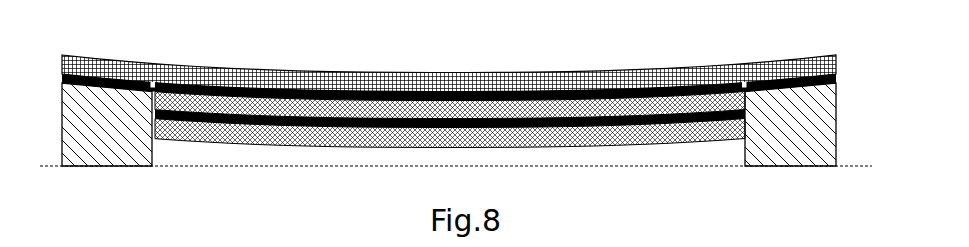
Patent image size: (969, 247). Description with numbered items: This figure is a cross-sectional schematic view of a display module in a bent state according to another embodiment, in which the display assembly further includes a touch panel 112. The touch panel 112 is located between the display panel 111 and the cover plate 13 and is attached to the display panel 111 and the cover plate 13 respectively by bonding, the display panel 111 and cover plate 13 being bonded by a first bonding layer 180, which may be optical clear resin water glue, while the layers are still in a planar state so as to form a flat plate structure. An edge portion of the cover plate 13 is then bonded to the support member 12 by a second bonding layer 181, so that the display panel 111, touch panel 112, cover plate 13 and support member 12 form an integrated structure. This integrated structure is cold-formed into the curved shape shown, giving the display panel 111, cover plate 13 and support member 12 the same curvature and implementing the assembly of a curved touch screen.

The support member 12 is at (820, 135).
The cover plate 13 is at (838, 59).
The display panel 111 is at (535, 111).
The touch panel 112 is at (598, 138).
The first bonding layer 180 is at (362, 91).
The second bonding layer 181 is at (747, 80).